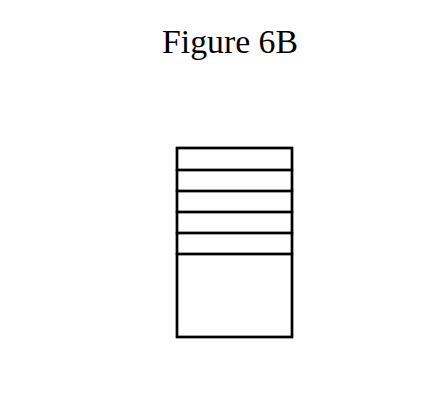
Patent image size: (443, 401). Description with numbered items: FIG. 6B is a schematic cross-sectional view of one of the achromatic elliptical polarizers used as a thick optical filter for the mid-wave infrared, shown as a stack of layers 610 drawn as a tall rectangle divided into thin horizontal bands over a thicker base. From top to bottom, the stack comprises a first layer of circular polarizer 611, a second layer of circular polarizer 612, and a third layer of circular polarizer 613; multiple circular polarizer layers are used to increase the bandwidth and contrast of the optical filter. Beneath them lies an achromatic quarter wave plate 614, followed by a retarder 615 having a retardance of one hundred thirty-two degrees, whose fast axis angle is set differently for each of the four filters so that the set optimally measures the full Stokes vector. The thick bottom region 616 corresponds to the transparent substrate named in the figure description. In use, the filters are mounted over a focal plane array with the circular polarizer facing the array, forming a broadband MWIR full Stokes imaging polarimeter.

The layer stack 610 is at (235, 118).
The layer of circular polarizer 611 is at (177, 161).
The second layer of circular polarizer 612 is at (292, 183).
The third layer of circular polarizer 613 is at (177, 201).
The achromatic quarter wave plate 614 is at (292, 222).
The retarder 615 is at (177, 246).
The substrate layer 616 is at (292, 310).